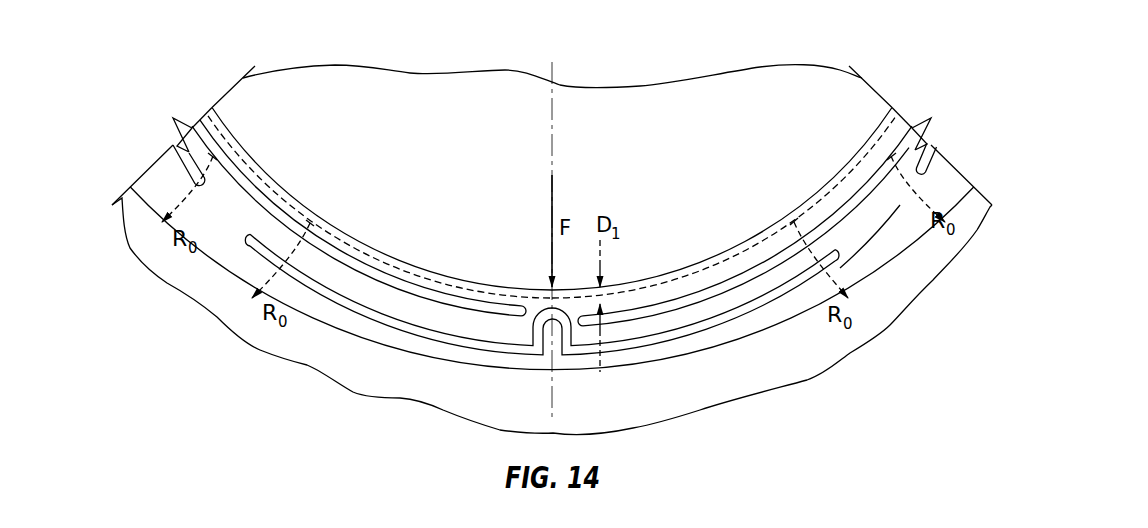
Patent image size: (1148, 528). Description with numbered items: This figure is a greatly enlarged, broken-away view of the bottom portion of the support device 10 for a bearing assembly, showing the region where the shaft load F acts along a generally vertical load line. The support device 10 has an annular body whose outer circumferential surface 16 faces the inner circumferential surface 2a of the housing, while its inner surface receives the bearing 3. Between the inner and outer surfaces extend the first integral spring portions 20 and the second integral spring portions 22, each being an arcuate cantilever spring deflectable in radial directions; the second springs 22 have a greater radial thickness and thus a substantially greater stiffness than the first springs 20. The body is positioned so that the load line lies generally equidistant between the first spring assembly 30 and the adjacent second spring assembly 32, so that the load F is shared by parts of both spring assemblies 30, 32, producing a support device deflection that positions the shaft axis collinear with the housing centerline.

The bearing 3 is at (748, 96).
The first spring assembly 30 is at (300, 168).
The second spring assembly 32 is at (815, 168).
The support device 10 is at (201, 286).
The first integral spring portion 20 is at (378, 296).
The second integral spring portion 22 is at (708, 311).
The outer circumferential surface 16 is at (778, 322).
The inner circumferential surface 2a is at (882, 238).